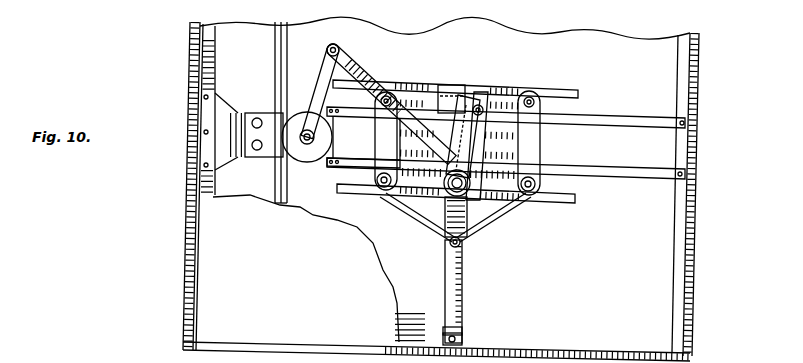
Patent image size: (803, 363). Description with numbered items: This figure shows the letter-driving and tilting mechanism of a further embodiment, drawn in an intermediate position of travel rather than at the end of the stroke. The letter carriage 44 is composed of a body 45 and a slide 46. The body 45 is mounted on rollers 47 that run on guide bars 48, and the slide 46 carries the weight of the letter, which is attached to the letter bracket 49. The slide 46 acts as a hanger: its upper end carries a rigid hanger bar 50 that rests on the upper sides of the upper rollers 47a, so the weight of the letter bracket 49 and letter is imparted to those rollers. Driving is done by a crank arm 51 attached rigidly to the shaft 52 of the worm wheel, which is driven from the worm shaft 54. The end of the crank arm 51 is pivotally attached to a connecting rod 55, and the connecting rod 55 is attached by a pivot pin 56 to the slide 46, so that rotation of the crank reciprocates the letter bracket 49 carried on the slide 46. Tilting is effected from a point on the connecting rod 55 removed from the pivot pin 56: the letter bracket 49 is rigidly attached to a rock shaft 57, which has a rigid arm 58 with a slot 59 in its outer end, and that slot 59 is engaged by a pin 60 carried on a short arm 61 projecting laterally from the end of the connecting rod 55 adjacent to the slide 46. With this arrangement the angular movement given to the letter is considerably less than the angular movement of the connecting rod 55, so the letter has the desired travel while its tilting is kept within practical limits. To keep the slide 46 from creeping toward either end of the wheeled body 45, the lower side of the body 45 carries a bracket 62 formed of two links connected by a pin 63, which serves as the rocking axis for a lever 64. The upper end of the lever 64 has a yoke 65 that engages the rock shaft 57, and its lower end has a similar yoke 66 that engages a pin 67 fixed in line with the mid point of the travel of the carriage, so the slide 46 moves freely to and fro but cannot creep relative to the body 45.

The letter carriage 44 is at (500, 117).
The body 45 is at (380, 137).
The slide 46 is at (443, 85).
The rollers 47 is at (379, 188).
The upper rollers 47a is at (530, 98).
The guide bars 48 is at (337, 168).
The letter bracket 49 is at (470, 212).
The hanger bar 50 is at (411, 88).
The crank arm 51 is at (327, 72).
The shaft 52 is at (300, 117).
The worm shaft 54 is at (282, 50).
The connecting rod 55 is at (363, 65).
The pivot pin 56 is at (432, 172).
The rock shaft 57 is at (408, 210).
The arm 58 is at (532, 138).
The slot 59 is at (478, 104).
The pin 60 is at (490, 114).
The short arm 61 is at (456, 117).
The bracket 62 is at (438, 230).
The pin 63 is at (450, 246).
The lever 64 is at (458, 298).
The yoke 65 is at (482, 173).
The yoke 66 is at (473, 333).
The pin 67 is at (460, 327).